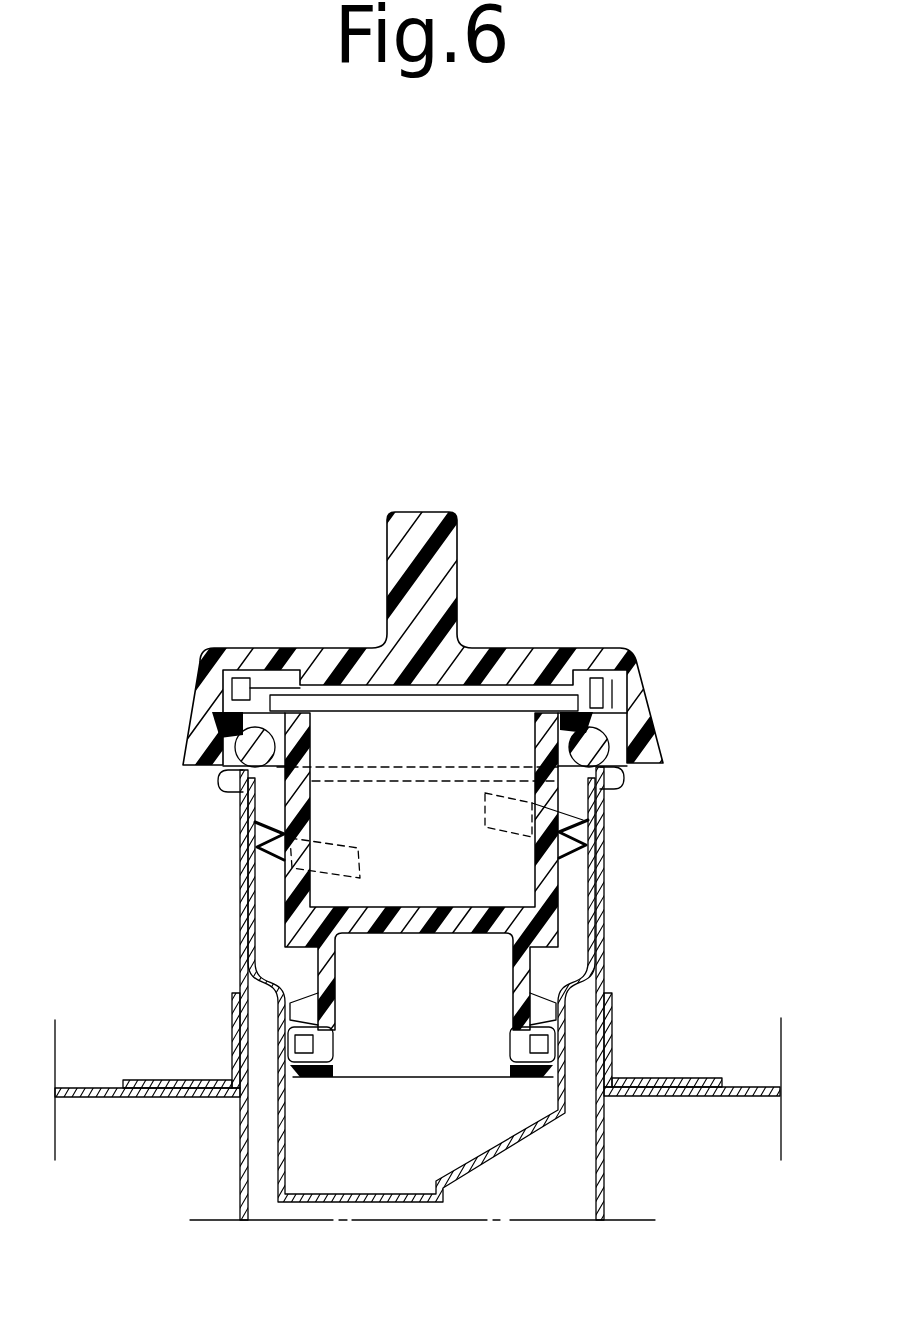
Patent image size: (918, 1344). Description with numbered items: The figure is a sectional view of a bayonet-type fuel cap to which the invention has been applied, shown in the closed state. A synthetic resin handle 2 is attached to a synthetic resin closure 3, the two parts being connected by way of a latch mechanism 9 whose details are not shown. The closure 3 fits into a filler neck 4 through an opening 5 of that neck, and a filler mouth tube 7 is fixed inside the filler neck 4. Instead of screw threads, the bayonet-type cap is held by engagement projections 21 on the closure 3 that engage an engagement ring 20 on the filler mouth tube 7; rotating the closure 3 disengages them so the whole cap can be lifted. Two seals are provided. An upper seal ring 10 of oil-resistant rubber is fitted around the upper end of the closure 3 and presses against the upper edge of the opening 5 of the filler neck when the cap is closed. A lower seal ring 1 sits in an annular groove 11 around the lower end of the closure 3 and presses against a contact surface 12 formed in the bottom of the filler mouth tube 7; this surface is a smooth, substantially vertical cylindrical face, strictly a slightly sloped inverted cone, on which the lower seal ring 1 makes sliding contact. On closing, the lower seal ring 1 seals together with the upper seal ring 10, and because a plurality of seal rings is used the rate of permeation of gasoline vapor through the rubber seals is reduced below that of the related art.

The lower seal ring 1 is at (287, 1052).
The handle 2 is at (333, 663).
The closure 3 is at (413, 864).
The filler neck 4 is at (240, 1188).
The opening 5 is at (218, 780).
The filler mouth tube 7 is at (374, 1153).
The latch mechanism 9 is at (604, 702).
The upper seal ring 10 is at (235, 748).
The annular groove 11 is at (308, 1030).
The contact surface 12 is at (288, 1088).
The engagement ring 20 is at (275, 832).
The engagement projections 21 is at (293, 862).